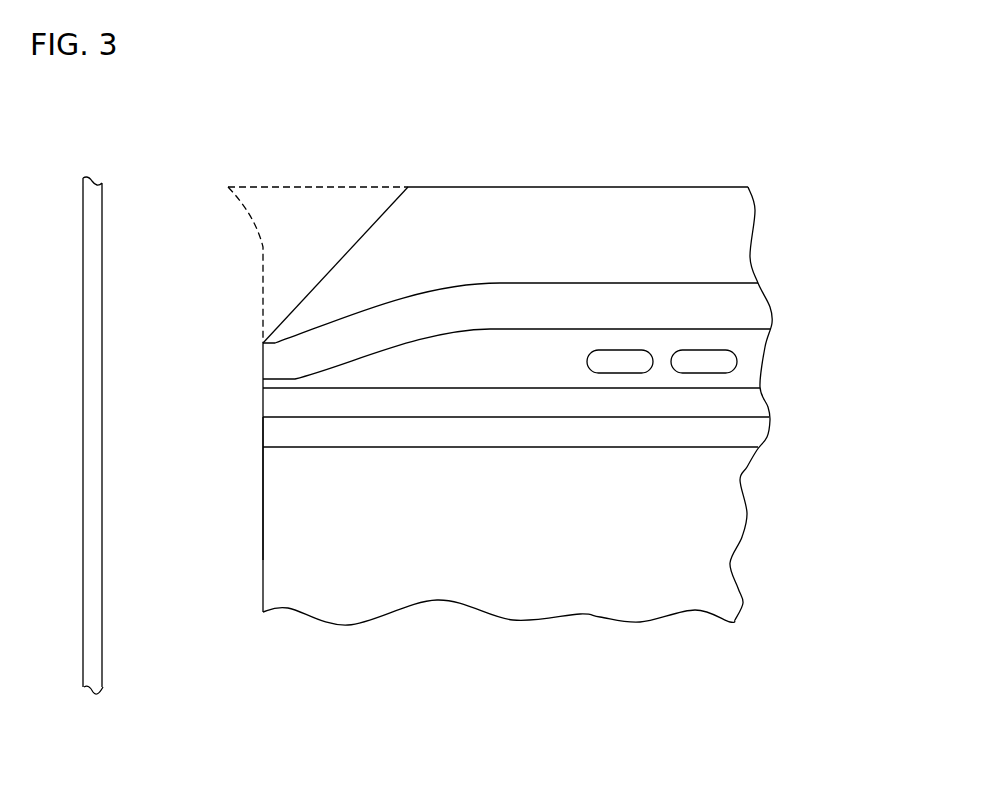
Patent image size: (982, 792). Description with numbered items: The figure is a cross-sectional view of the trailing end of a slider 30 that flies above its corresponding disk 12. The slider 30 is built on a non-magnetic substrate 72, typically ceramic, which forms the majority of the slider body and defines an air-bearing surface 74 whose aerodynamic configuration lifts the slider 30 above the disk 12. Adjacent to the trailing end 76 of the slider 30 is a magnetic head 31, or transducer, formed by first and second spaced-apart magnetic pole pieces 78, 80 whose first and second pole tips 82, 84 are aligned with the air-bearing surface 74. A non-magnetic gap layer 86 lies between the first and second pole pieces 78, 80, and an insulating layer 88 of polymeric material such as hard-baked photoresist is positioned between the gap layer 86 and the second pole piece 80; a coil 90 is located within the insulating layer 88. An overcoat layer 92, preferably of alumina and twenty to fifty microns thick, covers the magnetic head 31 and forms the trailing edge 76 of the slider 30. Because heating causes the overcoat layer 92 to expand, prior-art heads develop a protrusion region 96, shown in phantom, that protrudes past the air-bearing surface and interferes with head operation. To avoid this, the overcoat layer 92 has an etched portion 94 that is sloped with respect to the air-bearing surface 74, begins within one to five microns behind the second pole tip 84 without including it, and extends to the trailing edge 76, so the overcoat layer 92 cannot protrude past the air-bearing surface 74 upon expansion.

The disk 12 is at (84, 476).
The slider 30 is at (484, 434).
The magnetic head 31 is at (243, 403).
The non-magnetic substrate 72 is at (742, 537).
The air-bearing surface 74 is at (260, 533).
The trailing end 76 is at (507, 186).
The first magnetic pole piece 78 is at (767, 436).
The second magnetic pole piece 80 is at (768, 306).
The first pole tip 82 is at (262, 437).
The second pole tip 84 is at (263, 362).
The non-magnetic gap layer 86 is at (768, 407).
The insulating layer 88 is at (767, 345).
The coil 90 is at (737, 363).
The overcoat layer 92 is at (756, 210).
The etched portion 94 is at (323, 277).
The protrusion region 96 is at (239, 187).